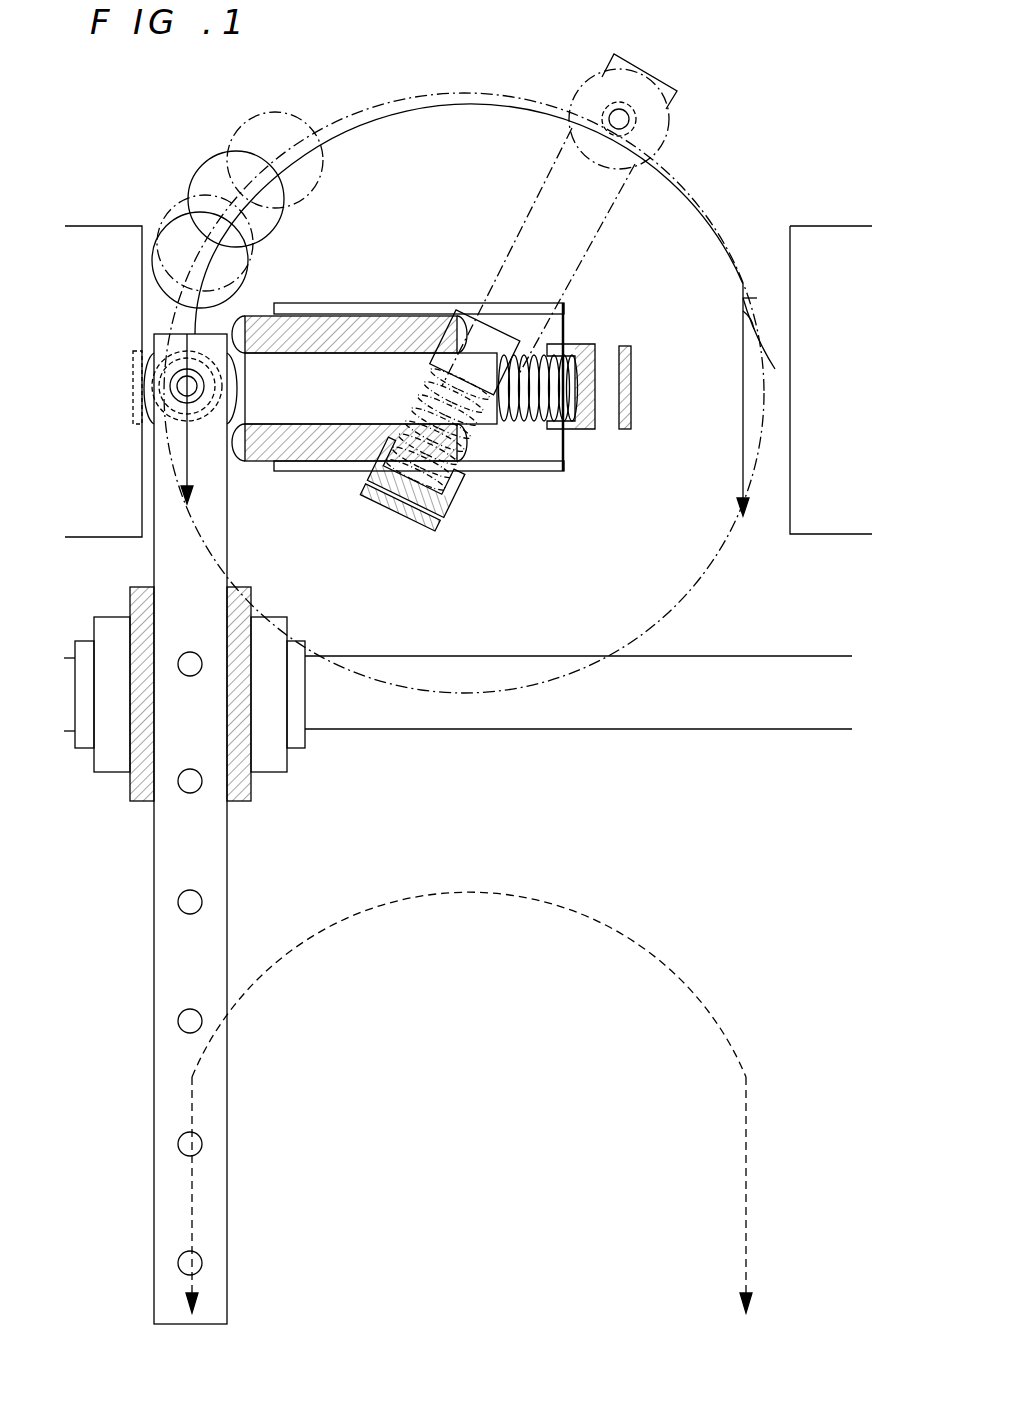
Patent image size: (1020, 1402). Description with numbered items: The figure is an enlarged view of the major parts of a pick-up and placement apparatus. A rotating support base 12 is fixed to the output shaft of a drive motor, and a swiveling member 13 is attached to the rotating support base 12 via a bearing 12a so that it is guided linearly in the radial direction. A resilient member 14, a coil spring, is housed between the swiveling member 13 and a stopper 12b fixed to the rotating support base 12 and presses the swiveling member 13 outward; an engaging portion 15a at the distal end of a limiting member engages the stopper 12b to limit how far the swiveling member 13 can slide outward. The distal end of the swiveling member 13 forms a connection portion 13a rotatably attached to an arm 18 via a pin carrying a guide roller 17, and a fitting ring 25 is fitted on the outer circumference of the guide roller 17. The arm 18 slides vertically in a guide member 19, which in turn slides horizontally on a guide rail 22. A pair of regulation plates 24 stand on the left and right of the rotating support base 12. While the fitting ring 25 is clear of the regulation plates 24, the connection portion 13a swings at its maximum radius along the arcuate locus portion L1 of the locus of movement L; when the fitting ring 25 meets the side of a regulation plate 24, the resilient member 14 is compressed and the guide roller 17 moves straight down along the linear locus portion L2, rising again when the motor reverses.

The rotating support base 12 is at (513, 473).
The bearing 12a is at (428, 333).
The stopper 12b is at (592, 343).
The swiveling member 13 is at (520, 213).
The connection portion 13a is at (140, 313).
The resilient member 14 is at (523, 423).
The engaging portion 15a is at (630, 407).
The guide roller 17 is at (195, 450).
The arm 18 is at (228, 1112).
The guide member 19 is at (262, 765).
The guide rail 22 is at (627, 730).
The regulation plate 24 is at (92, 224).
The fitting ring 25 is at (600, 70).
The locus of movement L is at (364, 78).
The arcuate locus portion L1 is at (680, 182).
The linear locus portion L2 is at (140, 453).